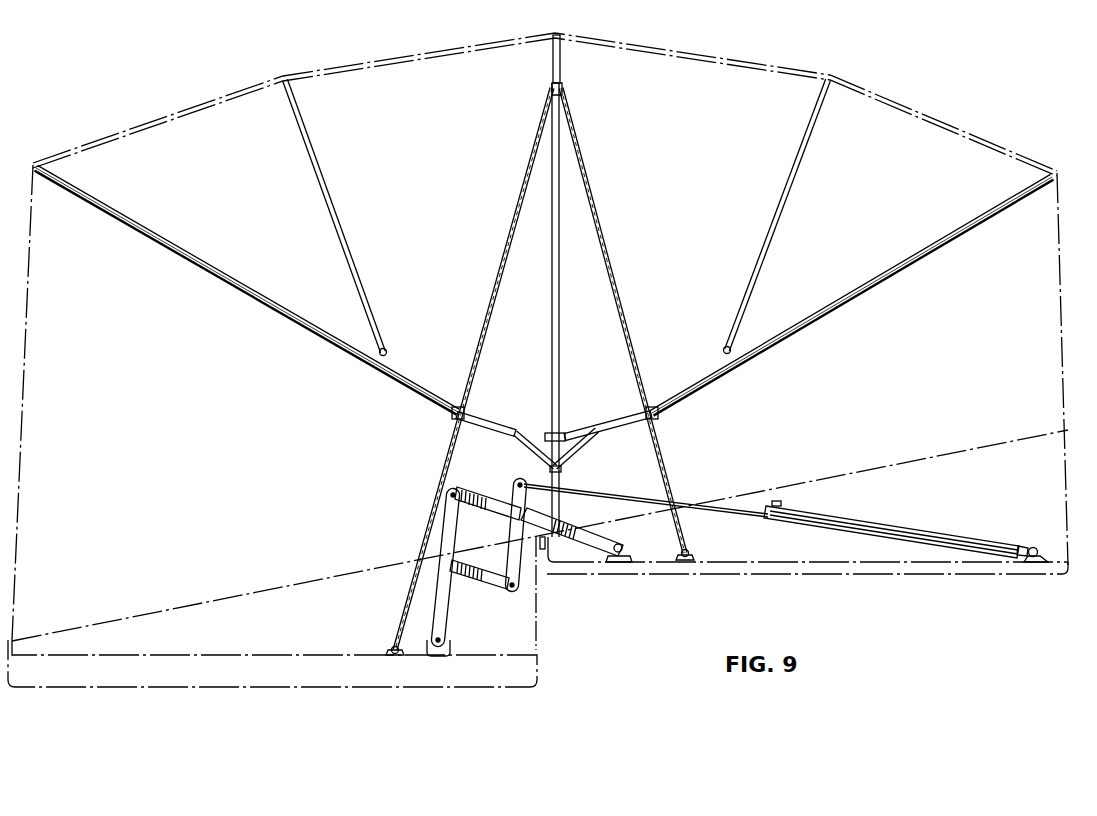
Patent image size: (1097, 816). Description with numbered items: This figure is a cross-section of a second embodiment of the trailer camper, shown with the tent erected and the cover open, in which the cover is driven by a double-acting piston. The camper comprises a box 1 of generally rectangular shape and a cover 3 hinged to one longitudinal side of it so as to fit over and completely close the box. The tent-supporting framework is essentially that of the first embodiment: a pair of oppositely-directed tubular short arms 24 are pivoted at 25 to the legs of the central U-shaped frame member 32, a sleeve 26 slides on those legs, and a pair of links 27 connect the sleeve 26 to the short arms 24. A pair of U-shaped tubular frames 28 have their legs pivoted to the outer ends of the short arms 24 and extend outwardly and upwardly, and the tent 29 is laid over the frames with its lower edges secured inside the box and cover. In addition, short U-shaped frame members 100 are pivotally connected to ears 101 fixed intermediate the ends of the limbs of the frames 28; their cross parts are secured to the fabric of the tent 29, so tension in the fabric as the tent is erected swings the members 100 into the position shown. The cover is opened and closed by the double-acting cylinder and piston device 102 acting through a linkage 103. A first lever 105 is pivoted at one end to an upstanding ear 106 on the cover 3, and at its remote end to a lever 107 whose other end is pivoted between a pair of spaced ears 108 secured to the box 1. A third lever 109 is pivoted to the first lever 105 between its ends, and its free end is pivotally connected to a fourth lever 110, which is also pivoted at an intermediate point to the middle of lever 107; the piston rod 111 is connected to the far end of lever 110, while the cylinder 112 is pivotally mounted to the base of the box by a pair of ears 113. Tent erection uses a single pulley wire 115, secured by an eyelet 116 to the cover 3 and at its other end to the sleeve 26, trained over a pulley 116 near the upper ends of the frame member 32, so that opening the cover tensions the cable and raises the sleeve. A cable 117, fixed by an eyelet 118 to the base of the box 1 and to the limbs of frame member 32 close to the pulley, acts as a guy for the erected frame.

The box 1 is at (795, 568).
The cover 3 is at (223, 675).
The short arms 24 is at (492, 423).
The pivot 25 is at (558, 433).
The sleeve 26 is at (558, 450).
The links 27 is at (583, 442).
The U-shaped tubular frames 28 is at (218, 270).
The tent 29 is at (155, 118).
The U-shaped frame member 32 is at (562, 71).
The short U-shaped frame members 100 is at (345, 236).
The ears 101 is at (388, 353).
The double-acting cylinder and piston device 102 is at (805, 513).
The linkage 103 is at (523, 592).
The first lever 105 is at (447, 617).
The upstanding ear 106 is at (450, 652).
The lever 107 is at (485, 498).
The spaced ears 108 is at (623, 551).
The third lever 109 is at (495, 577).
The fourth lever 110 is at (517, 567).
The piston rod 111 is at (705, 510).
The cylinder 112 is at (897, 532).
The ears 113 is at (1033, 547).
The pulley wire 115 is at (503, 257).
The eyelet and pulley 116 is at (563, 105).
The cable 117 is at (615, 288).
The eyelet 118 is at (690, 557).